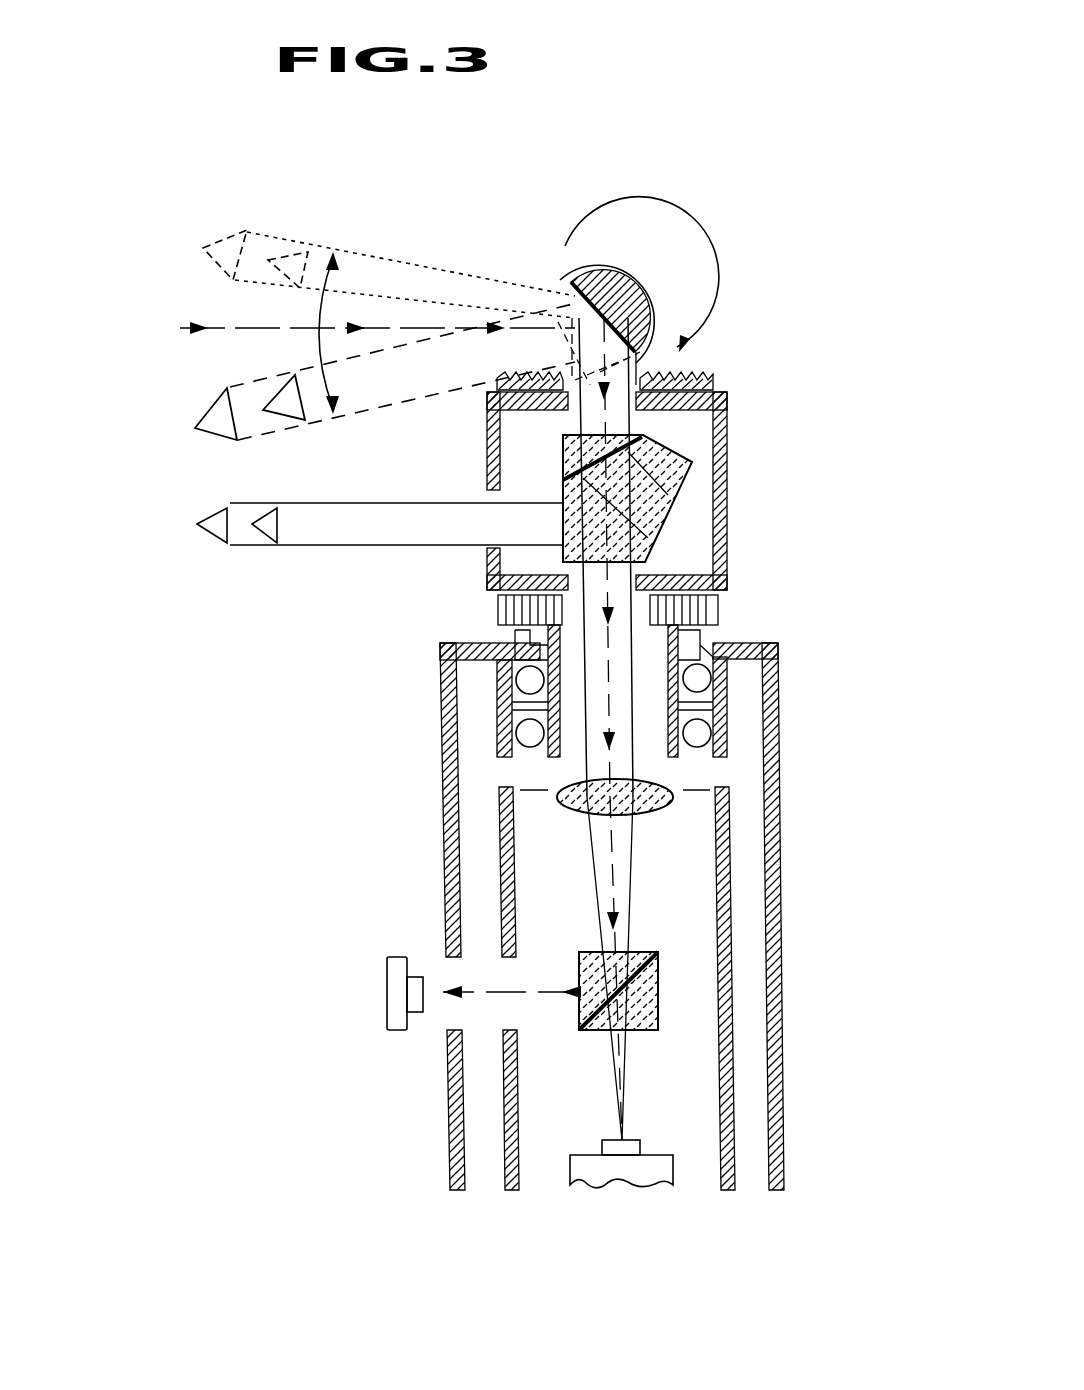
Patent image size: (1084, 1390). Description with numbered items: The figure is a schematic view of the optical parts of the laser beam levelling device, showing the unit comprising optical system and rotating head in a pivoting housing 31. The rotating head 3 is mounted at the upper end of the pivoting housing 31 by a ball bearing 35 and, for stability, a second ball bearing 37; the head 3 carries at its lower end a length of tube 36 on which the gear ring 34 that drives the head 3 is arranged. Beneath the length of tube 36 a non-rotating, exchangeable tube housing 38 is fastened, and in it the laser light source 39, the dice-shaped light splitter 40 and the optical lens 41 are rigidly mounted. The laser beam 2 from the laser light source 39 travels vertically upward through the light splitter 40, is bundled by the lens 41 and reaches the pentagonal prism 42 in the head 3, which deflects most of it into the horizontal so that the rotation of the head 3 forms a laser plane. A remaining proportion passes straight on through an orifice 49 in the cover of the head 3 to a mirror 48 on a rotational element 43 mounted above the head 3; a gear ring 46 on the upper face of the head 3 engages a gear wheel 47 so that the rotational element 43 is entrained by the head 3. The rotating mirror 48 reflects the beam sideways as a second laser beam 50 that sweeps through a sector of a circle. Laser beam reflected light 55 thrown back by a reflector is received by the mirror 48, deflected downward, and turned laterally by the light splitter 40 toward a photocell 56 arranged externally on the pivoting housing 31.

The laser beam 2 is at (305, 530).
The rotating head 3 is at (752, 520).
The pivoting housing 31 is at (772, 933).
The gear ring 34 is at (710, 608).
The ball bearing 35 is at (700, 680).
The length of tube 36 is at (712, 703).
The second ball bearing 37 is at (723, 743).
The tube housing 38 is at (723, 947).
The laser light source 39 is at (607, 1173).
The dice-shaped light splitter 40 is at (650, 995).
The optical lens 41 is at (663, 797).
The pentagonal prism 42 is at (650, 482).
The rotational element 43 is at (610, 287).
The gear ring 46 is at (713, 383).
The gear wheel 47 is at (653, 302).
The mirror 48 is at (570, 305).
The orifice 49 is at (638, 368).
The second laser beam 50 is at (253, 253).
The laser beam reflected light 55 is at (200, 328).
The photocell 56 is at (395, 982).